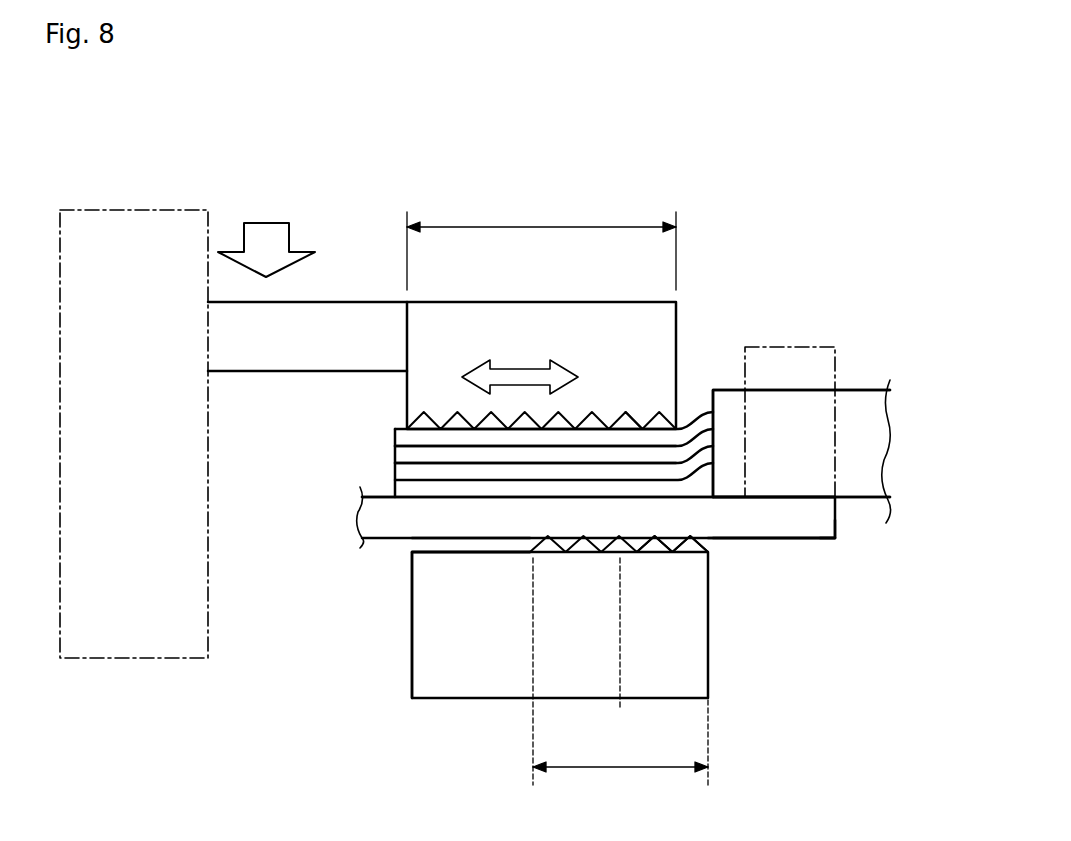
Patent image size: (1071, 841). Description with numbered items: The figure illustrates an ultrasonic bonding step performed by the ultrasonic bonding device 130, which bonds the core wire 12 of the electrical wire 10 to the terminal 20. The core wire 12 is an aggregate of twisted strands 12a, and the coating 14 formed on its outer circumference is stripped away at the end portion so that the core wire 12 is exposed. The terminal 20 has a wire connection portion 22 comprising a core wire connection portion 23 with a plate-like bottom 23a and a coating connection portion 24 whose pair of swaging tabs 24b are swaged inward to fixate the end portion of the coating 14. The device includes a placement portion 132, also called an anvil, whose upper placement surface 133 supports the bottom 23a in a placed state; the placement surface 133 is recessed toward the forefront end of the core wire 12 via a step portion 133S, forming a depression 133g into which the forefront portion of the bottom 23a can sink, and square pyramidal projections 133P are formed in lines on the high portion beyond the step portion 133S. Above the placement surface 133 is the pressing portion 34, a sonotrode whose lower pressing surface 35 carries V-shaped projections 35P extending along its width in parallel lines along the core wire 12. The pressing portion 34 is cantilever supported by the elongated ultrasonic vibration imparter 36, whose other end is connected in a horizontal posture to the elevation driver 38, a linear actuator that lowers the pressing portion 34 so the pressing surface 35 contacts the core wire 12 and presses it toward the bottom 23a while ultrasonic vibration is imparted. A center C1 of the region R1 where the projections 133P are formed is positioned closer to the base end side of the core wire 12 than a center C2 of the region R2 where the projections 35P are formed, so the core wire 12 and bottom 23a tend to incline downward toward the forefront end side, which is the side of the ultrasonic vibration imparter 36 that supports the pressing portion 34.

The ultrasonic bonding device 130 is at (340, 172).
The elevation driver 38 is at (183, 210).
The ultrasonic vibration imparter 36 is at (350, 300).
The pressing portion 34 is at (676, 318).
The pressing surface 35 is at (432, 424).
The projections 35P is at (641, 426).
The core wire 12 is at (395, 433).
The strands 12a is at (395, 472).
The electrical wire 10 is at (866, 386).
The coating 14 is at (880, 438).
The swaging tabs 24b is at (797, 346).
The core wire connection portion 23 is at (390, 540).
The bottom 23a is at (470, 528).
The coating connection portion 24 is at (837, 538).
The wire connection portion 22 is at (746, 540).
The terminal 20 is at (833, 542).
The depression 133g is at (417, 552).
The placement portion 132 is at (710, 665).
The placement surface 133 is at (420, 556).
The step portion 133S is at (530, 552).
The projections 133P is at (690, 540).
The region R1 is at (620, 680).
The center C1 is at (620, 700).
The region R2 is at (541, 241).
The center C2 is at (540, 300).